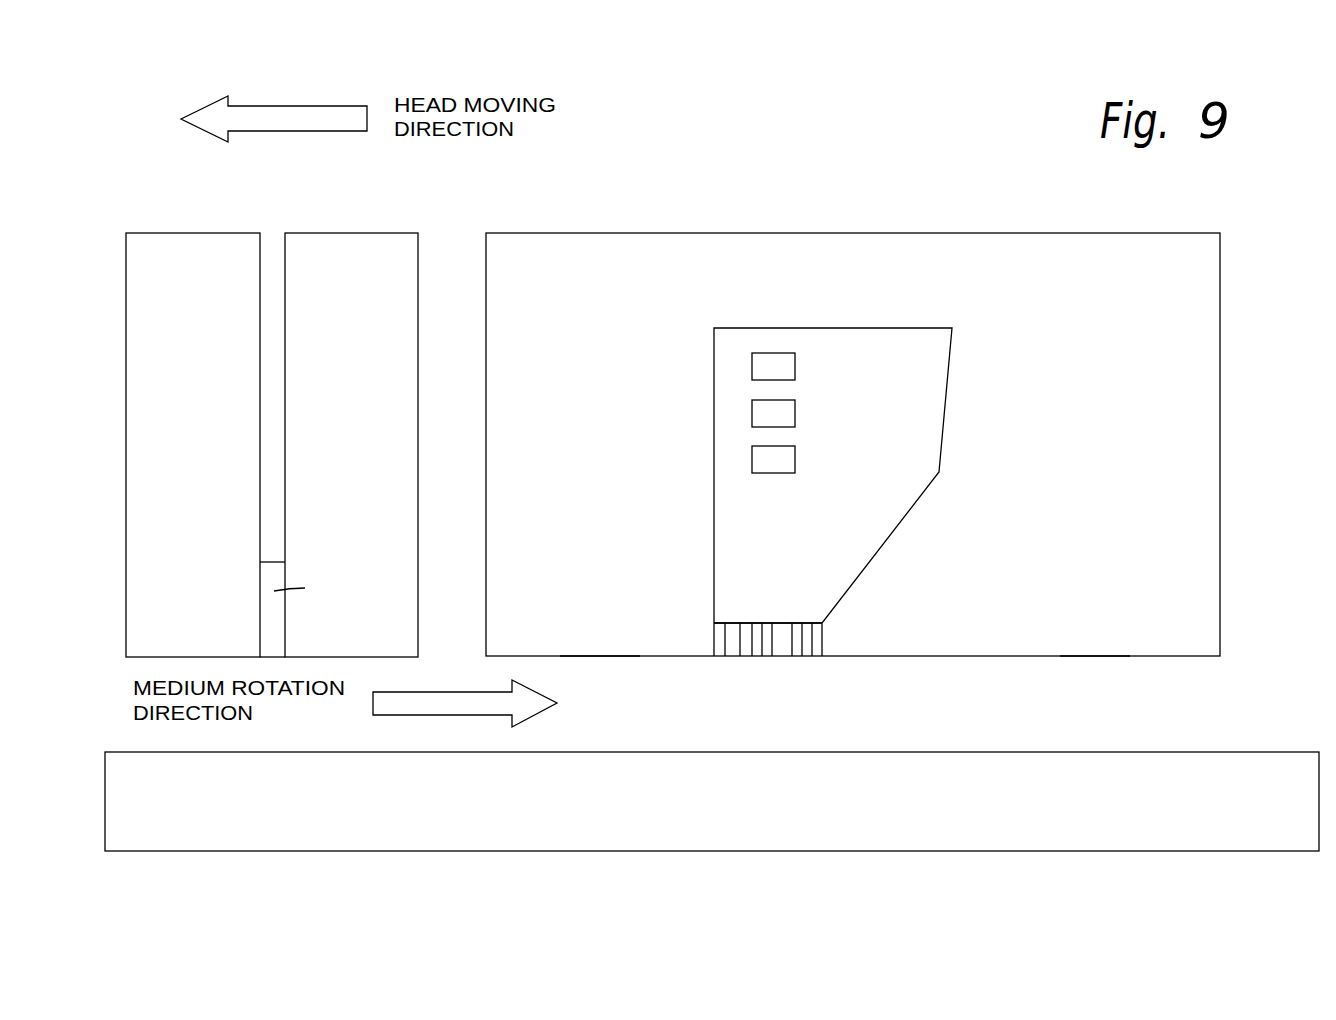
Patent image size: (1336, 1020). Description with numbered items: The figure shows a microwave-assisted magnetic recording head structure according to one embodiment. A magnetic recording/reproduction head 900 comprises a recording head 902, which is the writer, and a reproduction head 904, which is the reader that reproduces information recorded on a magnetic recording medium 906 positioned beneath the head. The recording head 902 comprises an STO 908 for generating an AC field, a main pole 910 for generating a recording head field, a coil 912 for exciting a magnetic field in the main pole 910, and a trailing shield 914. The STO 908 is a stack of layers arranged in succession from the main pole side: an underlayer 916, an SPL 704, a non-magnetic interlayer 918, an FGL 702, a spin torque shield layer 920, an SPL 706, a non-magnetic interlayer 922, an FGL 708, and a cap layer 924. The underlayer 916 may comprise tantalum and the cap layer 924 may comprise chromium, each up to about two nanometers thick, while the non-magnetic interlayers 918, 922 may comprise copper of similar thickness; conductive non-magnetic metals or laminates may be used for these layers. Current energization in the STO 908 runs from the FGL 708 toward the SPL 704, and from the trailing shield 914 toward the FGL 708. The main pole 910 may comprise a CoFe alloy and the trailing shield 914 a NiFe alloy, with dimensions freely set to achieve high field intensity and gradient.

The magnetic recording/reproduction head 900 is at (778, 114).
The recording head 902 is at (853, 232).
The reproduction head 904 is at (350, 232).
The magnetic recording medium 906 is at (1272, 752).
The STO 908 is at (860, 700).
The main pole 910 is at (592, 656).
The coil 912 is at (795, 367).
The trailing shield 914 is at (1090, 656).
The underlayer 916 is at (722, 640).
The non-magnetic interlayer 918 is at (747, 628).
The spin torque shield layer 920 is at (767, 622).
The non-magnetic interlayer 922 is at (795, 628).
The cap layer 924 is at (817, 639).
The FGL 702 is at (758, 656).
The SPL 704 is at (732, 656).
The SPL 706 is at (782, 656).
The FGL 708 is at (808, 656).